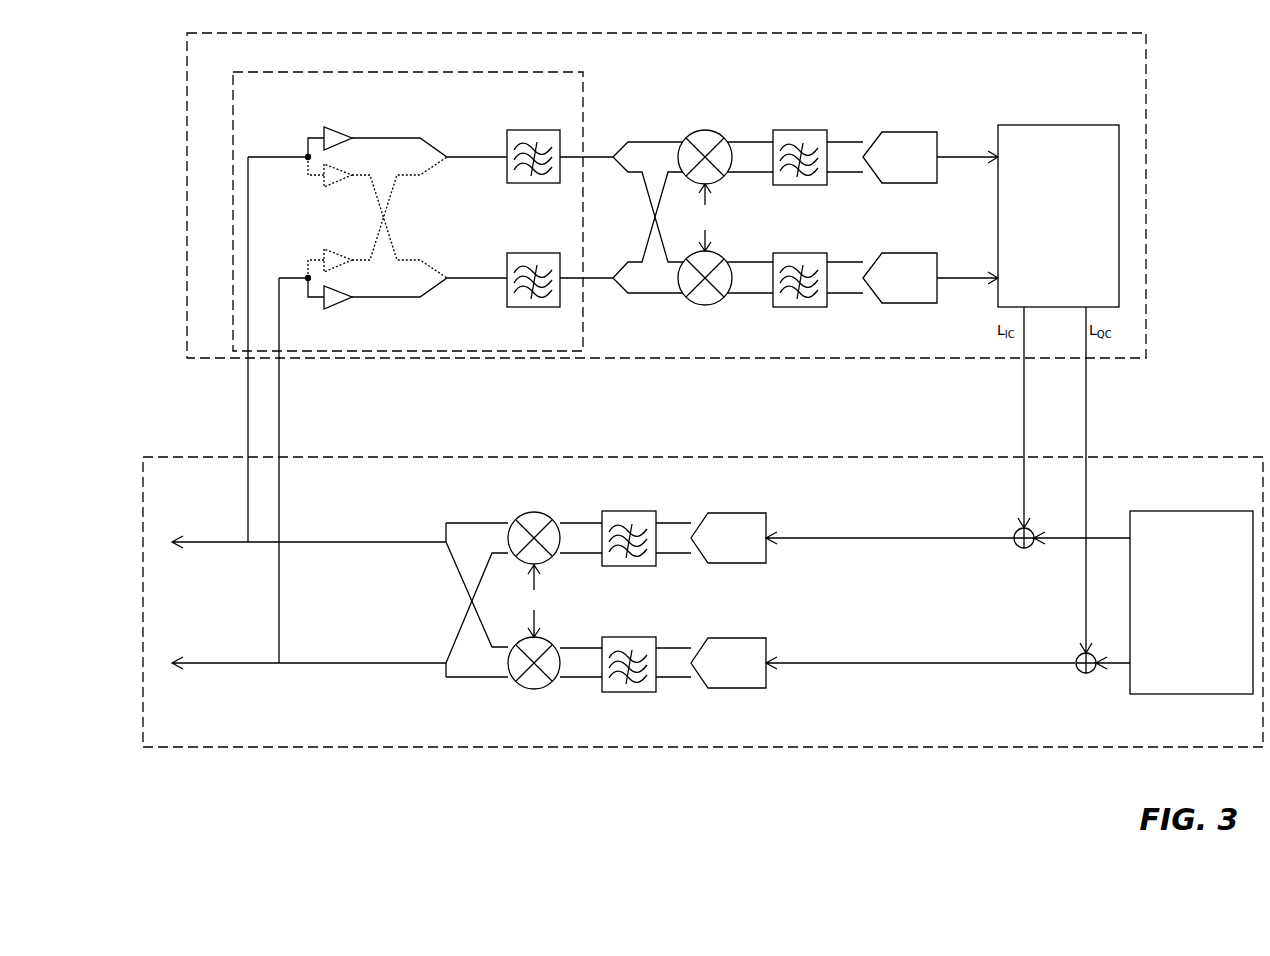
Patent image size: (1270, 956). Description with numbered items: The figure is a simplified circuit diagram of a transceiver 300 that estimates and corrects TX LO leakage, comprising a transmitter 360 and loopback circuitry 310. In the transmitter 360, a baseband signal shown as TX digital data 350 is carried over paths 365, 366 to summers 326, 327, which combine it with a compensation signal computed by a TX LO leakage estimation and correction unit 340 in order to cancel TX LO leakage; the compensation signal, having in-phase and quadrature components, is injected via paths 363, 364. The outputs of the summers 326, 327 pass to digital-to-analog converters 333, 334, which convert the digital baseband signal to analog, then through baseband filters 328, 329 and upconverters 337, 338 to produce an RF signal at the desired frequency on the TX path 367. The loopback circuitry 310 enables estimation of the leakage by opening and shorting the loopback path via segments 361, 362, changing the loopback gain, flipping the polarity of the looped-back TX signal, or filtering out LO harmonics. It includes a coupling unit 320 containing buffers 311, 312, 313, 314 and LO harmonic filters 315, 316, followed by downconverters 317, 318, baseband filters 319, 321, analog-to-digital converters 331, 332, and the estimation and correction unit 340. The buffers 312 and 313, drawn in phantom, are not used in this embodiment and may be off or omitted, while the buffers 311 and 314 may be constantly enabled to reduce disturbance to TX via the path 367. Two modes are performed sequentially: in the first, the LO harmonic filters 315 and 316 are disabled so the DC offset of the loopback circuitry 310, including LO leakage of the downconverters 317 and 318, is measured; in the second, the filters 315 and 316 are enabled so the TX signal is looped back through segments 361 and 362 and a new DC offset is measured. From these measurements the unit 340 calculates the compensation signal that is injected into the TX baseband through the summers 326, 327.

The transceiver 300 is at (1188, 847).
The loopback circuitry 310 is at (666, 195).
The coupling unit 320 is at (408, 211).
The buffer 311 is at (335, 127).
The buffer 312 is at (334, 186).
The buffer 313 is at (334, 250).
The buffer 314 is at (335, 309).
The LO harmonic filter 315 is at (535, 130).
The LO harmonic filter 316 is at (537, 307).
The downconverter 317 is at (705, 130).
The downconverter 318 is at (707, 305).
The baseband filter 319 is at (800, 130).
The baseband filter 321 is at (802, 307).
The analog-to-digital converter 331 is at (930, 157).
The analog-to-digital converter 332 is at (930, 278).
The TX LO leakage estimation and correction unit 340 is at (1058, 216).
The loopback path segment 361 is at (281, 419).
The loopback path segment 362 is at (246, 419).
The compensation signal path 363 is at (1022, 418).
The compensation signal path 364 is at (1088, 418).
The transmitter 360 is at (703, 602).
The upconverter 337 is at (534, 512).
The upconverter 338 is at (534, 690).
The baseband filter 328 is at (631, 511).
The baseband filter 329 is at (632, 692).
The digital-to-analog converter 333 is at (852, 538).
The digital-to-analog converter 334 is at (883, 663).
The summer 326 is at (1013, 530).
The summer 327 is at (1079, 676).
The baseband signal path 365 is at (1112, 536).
The baseband signal path 366 is at (1112, 672).
The TX path 367 is at (183, 555).
The TX digital data 350 is at (1191, 602).